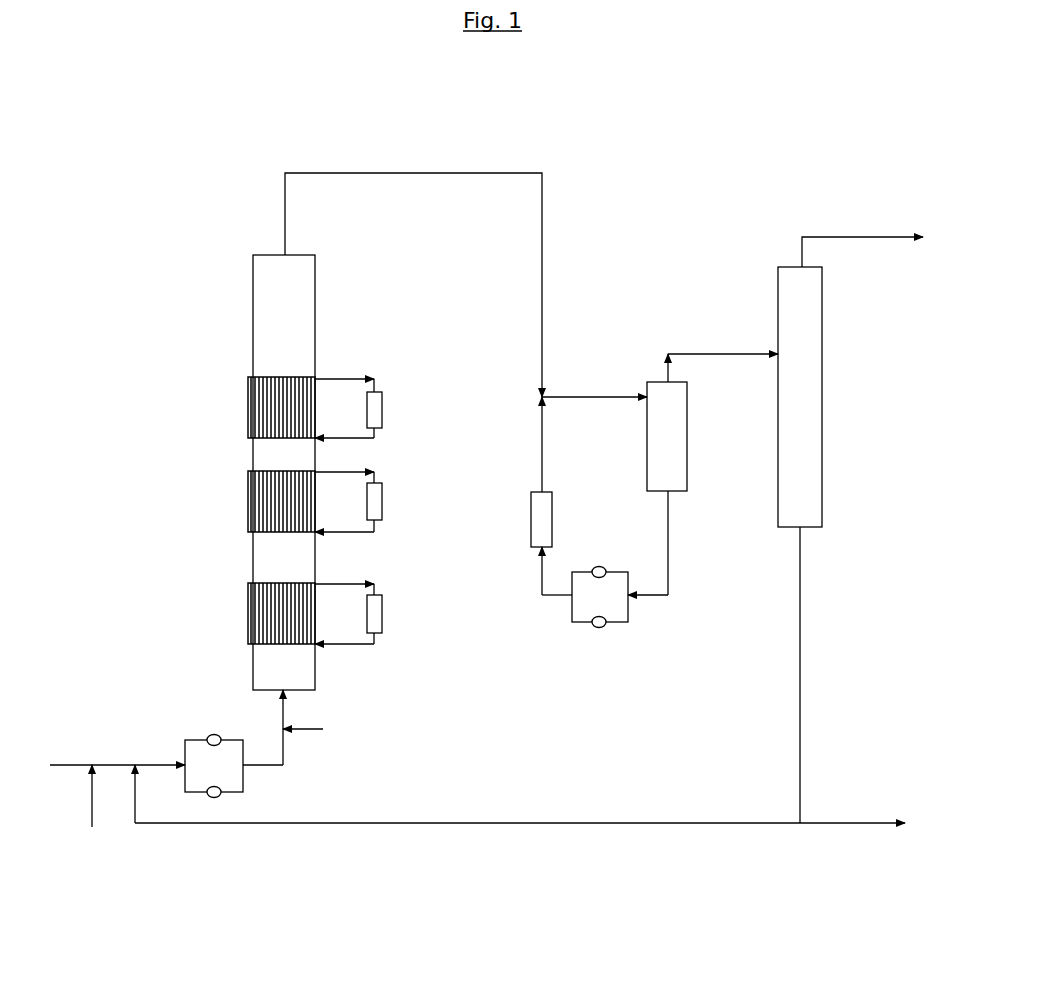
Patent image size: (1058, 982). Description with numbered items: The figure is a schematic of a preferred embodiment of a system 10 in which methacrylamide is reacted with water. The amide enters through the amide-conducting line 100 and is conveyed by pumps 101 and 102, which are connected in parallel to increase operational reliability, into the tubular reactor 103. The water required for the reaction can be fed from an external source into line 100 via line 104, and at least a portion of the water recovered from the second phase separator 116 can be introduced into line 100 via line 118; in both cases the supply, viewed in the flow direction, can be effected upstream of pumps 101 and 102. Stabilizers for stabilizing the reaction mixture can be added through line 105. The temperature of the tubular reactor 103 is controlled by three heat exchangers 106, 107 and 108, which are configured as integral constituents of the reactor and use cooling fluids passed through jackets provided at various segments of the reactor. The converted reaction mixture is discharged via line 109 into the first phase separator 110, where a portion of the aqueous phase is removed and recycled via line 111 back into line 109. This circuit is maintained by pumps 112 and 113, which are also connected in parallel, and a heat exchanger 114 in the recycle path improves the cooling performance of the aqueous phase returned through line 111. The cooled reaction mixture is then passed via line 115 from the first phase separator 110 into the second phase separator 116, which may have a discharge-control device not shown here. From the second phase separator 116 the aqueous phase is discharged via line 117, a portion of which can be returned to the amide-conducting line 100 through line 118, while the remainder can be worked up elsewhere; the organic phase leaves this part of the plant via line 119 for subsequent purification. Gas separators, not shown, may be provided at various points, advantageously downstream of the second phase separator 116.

The system 10 is at (235, 103).
The line 100 is at (102, 760).
The pump 101 is at (214, 733).
The pump 102 is at (214, 800).
The tubular reactor 103 is at (270, 328).
The line 104 is at (93, 797).
The line 105 is at (323, 729).
The heat exchanger 106 is at (376, 615).
The heat exchanger 107 is at (376, 503).
The heat exchanger 108 is at (377, 410).
The line 109 is at (415, 173).
The first phase separator 110 is at (673, 440).
The line 111 is at (542, 445).
The pump 112 is at (602, 568).
The pump 113 is at (603, 628).
The heat exchanger 114 is at (537, 518).
The line 115 is at (722, 352).
The second phase separator 116 is at (808, 380).
The line 117 is at (799, 680).
The line 118 is at (573, 823).
The line 119 is at (840, 237).